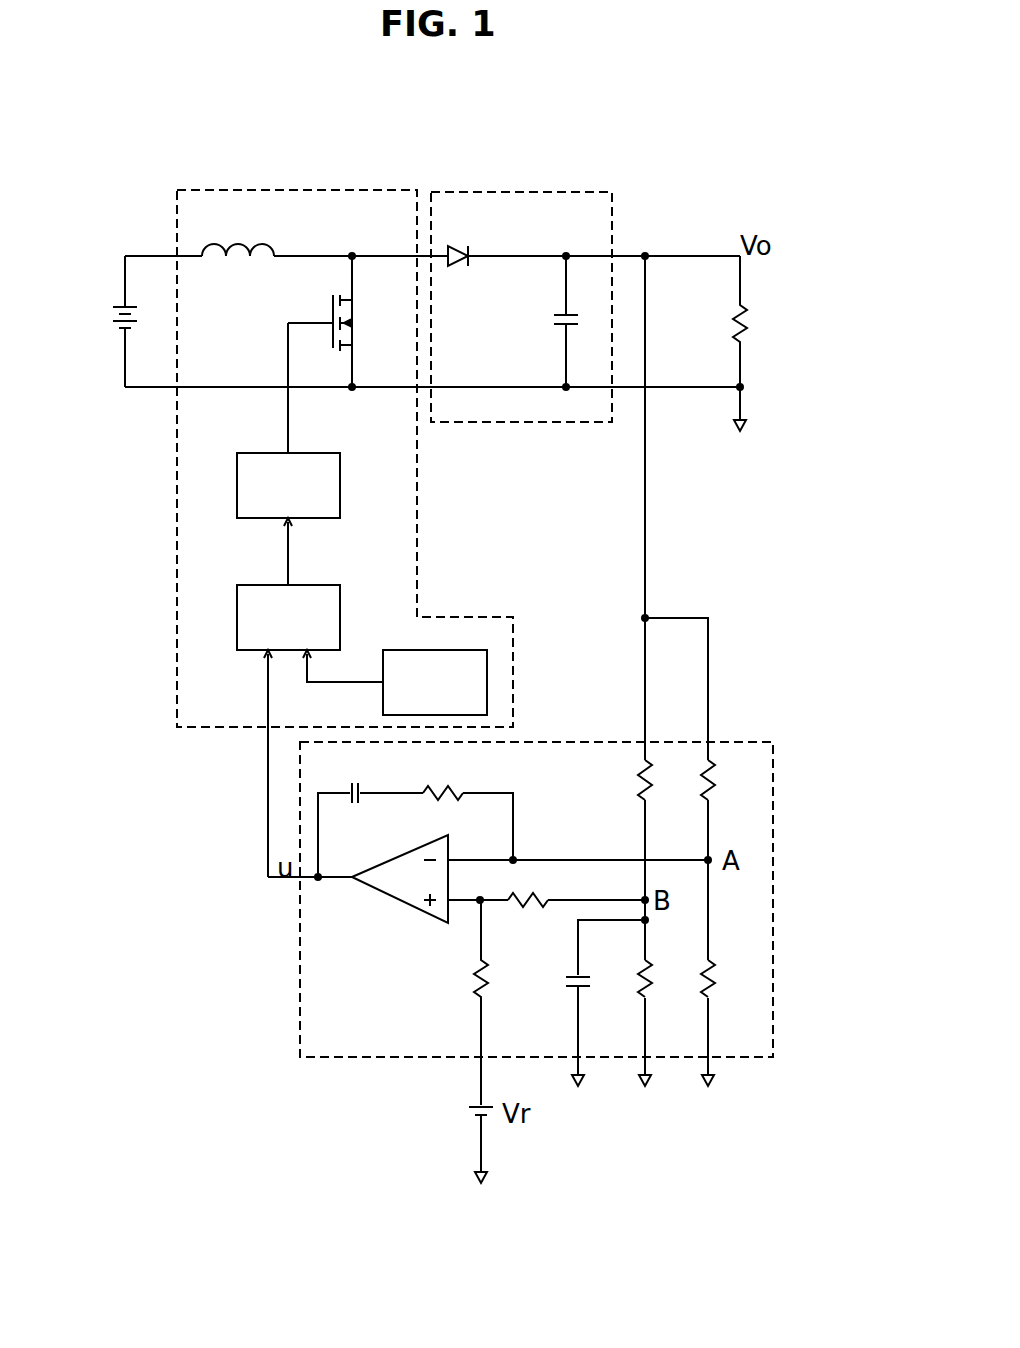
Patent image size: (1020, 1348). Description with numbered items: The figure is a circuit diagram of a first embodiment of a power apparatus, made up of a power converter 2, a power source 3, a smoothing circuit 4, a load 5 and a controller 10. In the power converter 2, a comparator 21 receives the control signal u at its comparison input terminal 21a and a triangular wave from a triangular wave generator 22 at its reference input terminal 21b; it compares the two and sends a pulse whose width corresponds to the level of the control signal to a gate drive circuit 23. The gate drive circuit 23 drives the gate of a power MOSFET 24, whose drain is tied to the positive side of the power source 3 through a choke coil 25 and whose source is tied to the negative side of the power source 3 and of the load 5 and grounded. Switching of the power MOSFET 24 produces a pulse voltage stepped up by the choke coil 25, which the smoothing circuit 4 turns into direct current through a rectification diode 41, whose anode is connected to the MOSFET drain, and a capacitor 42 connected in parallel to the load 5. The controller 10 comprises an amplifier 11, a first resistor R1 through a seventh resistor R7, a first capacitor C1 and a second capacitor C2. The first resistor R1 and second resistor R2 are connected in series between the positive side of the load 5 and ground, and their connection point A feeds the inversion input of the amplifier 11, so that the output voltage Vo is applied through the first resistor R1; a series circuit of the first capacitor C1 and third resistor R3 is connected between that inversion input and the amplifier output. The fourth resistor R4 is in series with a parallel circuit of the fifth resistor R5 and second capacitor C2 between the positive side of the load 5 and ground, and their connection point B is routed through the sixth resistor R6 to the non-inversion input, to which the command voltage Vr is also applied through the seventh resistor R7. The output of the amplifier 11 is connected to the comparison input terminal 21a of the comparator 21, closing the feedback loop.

The power converter 2 is at (293, 190).
The power source 3 is at (112, 318).
The smoothing circuit 4 is at (573, 192).
The load 5 is at (751, 328).
The controller 10 is at (757, 743).
The amplifier 11 is at (400, 890).
The comparator 21 is at (306, 638).
The comparison input terminal 21a is at (260, 652).
The reference input terminal 21b is at (307, 657).
The triangular wave generator 22 is at (453, 706).
The gate drive circuit 23 is at (306, 508).
The power MOSFET 24 is at (358, 318).
The choke coil 25 is at (267, 248).
The rectification diode 41 is at (481, 230).
The capacitor 42 is at (555, 318).
The first resistor R1 is at (720, 786).
The second resistor R2 is at (716, 968).
The third resistor R3 is at (460, 766).
The fourth resistor R4 is at (622, 780).
The fifth resistor R5 is at (598, 981).
The sixth resistor R6 is at (510, 910).
The seventh resistor R7 is at (476, 977).
The first capacitor C1 is at (375, 765).
The second capacitor C2 is at (574, 986).